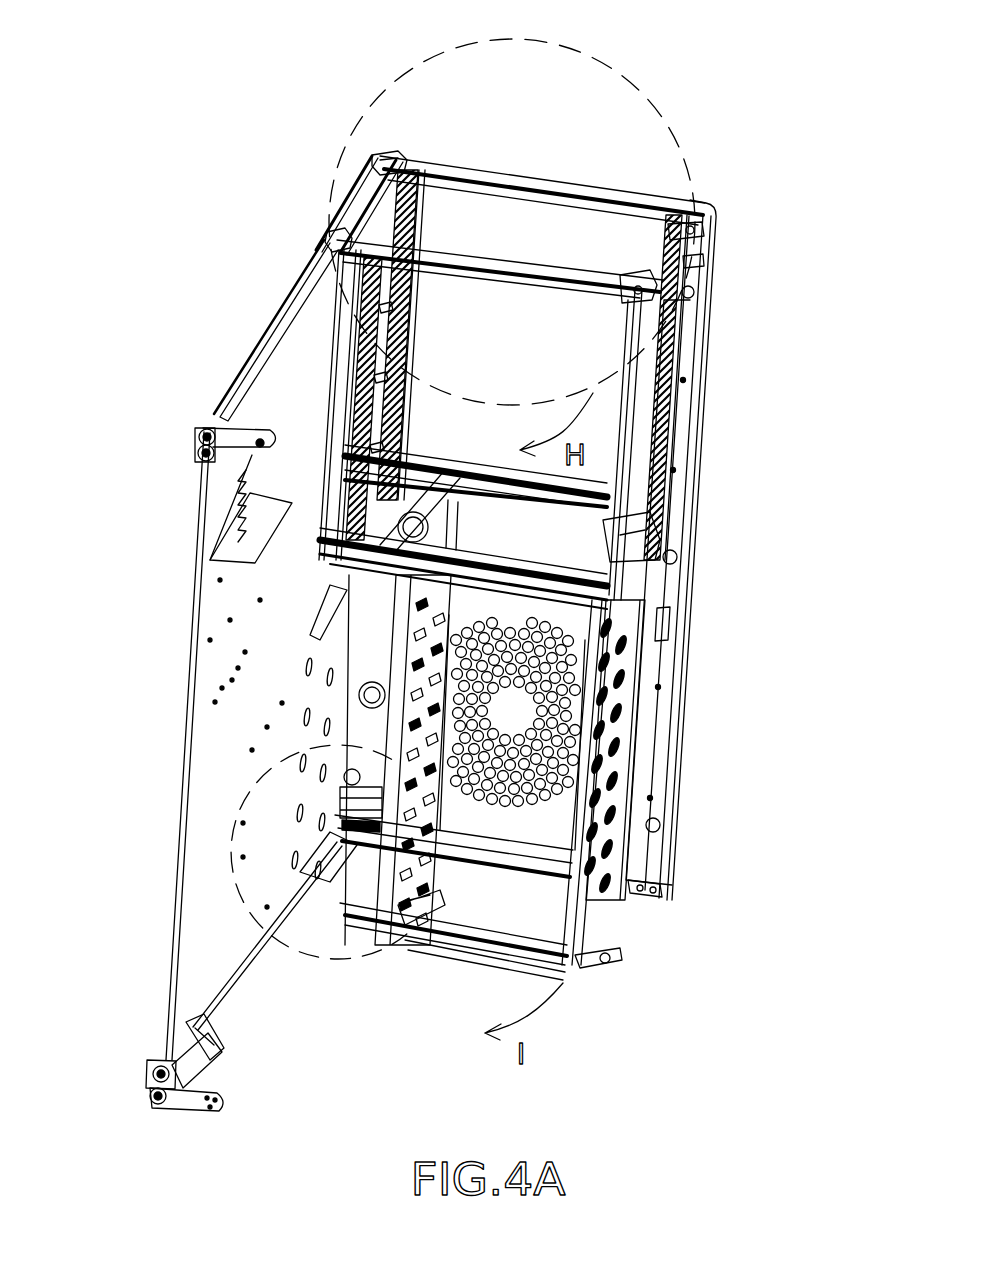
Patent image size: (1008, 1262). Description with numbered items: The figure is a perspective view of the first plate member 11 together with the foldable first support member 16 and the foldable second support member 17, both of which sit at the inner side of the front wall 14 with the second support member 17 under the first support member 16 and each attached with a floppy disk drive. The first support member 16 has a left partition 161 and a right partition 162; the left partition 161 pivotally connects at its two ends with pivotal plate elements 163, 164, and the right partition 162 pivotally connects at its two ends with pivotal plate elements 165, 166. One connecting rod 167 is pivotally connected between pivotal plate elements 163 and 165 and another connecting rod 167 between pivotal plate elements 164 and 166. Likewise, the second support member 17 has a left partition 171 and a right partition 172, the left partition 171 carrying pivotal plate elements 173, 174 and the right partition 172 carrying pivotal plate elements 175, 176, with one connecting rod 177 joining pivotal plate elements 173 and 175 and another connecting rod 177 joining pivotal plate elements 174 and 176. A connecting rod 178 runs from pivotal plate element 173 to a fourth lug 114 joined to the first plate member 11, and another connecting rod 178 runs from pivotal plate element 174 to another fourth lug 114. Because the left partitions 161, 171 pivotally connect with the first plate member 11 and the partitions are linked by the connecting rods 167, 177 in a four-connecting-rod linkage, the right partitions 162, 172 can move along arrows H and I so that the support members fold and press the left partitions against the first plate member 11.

The first plate member 11 is at (198, 797).
The front wall 14 is at (657, 195).
The first support member 16 is at (463, 203).
The second support member 17 is at (650, 932).
The fourth lug 114 is at (320, 870).
The left partition 161 is at (330, 283).
The right partition 162 is at (672, 357).
The pivotal plate element 163 is at (398, 158).
The pivotal plate element 164 is at (337, 235).
The pivotal plate element 165 is at (690, 220).
The pivotal plate element 166 is at (710, 262).
The connecting rod 167 is at (562, 200).
The left partition 171 is at (400, 645).
The right partition 172 is at (572, 970).
The pivotal plate element 173 is at (455, 935).
The pivotal plate element 174 is at (400, 920).
The pivotal plate element 175 is at (655, 890).
The pivotal plate element 176 is at (605, 952).
The connecting rod 177 is at (500, 868).
The connecting rod 178 is at (272, 942).